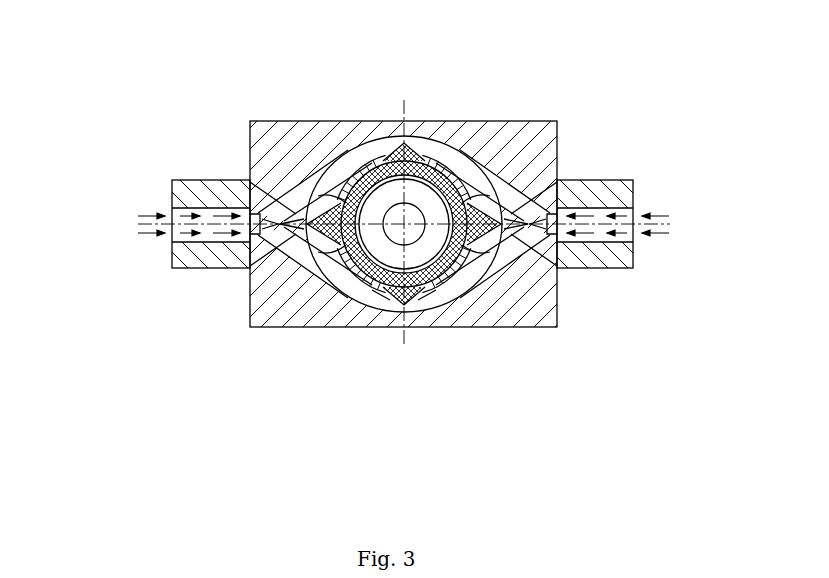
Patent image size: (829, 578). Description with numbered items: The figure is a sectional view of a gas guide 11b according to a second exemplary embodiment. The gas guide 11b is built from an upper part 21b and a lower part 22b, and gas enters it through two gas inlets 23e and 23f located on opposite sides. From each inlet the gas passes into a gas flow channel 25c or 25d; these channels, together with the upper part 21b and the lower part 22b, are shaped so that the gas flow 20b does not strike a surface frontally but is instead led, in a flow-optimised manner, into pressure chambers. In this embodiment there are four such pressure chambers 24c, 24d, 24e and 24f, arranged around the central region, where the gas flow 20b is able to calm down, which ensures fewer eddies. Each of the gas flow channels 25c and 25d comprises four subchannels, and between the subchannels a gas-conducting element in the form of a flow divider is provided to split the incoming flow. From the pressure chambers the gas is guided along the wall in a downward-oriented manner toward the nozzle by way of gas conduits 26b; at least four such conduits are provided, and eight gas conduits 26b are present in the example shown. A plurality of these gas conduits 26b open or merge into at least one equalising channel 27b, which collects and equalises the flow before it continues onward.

The gas guide 11b is at (230, 343).
The gas flow 20b is at (413, 245).
The upper part 21b is at (300, 147).
The lower part 22b is at (413, 155).
The gas inlet 23e is at (207, 194).
The gas inlet 23f is at (605, 192).
The pressure chamber 24c is at (330, 270).
The pressure chamber 24d is at (473, 277).
The pressure chamber 24e is at (462, 162).
The pressure chamber 24f is at (358, 155).
The gas flow channel 25c is at (270, 224).
The gas flow channel 25d is at (530, 218).
The gas conduit 26b is at (378, 285).
The equalising channel 27b is at (445, 270).